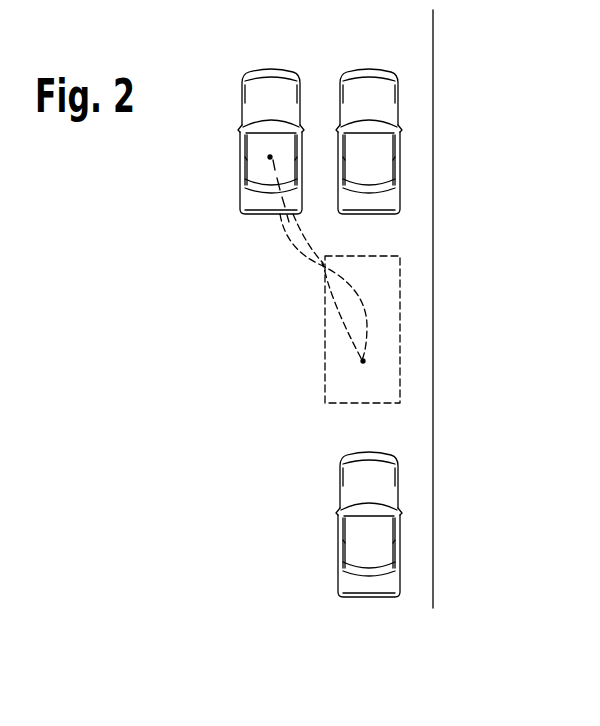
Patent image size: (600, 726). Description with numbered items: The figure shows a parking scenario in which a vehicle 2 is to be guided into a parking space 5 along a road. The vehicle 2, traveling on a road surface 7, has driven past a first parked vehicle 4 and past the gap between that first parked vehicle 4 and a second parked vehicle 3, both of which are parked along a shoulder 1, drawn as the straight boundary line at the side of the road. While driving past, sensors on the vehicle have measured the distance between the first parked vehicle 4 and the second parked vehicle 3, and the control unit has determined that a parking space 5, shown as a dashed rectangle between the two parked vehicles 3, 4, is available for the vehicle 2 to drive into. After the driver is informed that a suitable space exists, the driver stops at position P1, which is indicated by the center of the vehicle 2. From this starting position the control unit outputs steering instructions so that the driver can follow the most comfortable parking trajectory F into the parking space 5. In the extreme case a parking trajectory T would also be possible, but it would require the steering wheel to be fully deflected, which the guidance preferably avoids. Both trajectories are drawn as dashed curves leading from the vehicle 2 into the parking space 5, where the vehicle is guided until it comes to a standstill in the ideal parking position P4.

The shoulder 1 is at (434, 262).
The vehicle 2 is at (240, 126).
The second parked vehicle 3 is at (365, 73).
The first parked vehicle 4 is at (337, 530).
The parking space 5 is at (323, 401).
The road surface 7 is at (203, 353).
The position P1 is at (270, 157).
The ideal parking position P4 is at (363, 361).
The parking trajectory T is at (298, 250).
The parking trajectory F is at (302, 236).